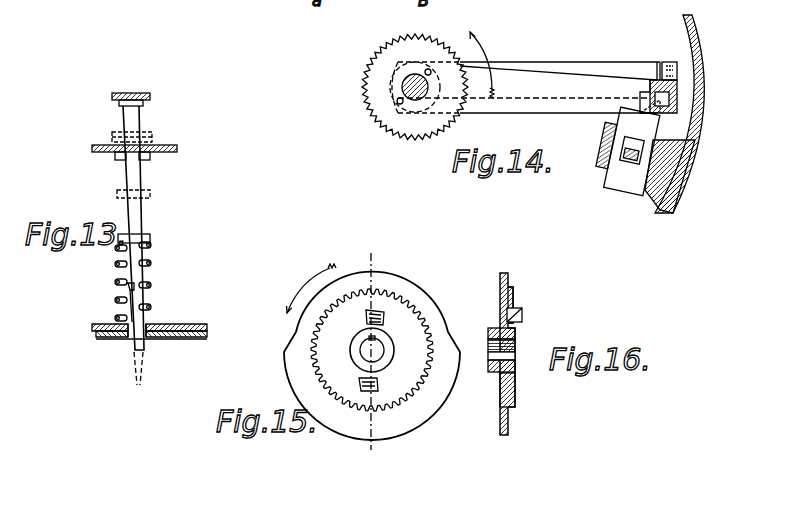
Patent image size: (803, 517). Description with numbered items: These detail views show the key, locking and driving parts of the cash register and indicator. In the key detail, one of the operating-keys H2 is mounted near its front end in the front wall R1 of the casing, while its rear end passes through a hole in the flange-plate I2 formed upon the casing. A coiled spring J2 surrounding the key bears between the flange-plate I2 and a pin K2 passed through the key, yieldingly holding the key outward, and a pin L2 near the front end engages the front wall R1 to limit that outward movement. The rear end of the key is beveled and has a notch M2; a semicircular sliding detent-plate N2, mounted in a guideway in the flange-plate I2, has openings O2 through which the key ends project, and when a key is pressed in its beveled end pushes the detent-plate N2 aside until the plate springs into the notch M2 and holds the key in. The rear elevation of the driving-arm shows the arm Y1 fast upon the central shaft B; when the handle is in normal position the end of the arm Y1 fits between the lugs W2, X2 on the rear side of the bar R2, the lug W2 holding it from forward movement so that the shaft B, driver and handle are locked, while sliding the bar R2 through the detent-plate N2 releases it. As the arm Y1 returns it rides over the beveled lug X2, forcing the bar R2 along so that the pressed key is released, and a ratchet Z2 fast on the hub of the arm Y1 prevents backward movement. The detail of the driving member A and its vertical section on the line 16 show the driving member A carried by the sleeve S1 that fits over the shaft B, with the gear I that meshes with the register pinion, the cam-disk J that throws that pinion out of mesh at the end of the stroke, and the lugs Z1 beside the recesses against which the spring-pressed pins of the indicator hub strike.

In FIG. 13, the front wall R1 is at (176, 146).
In FIG. 13, the pins L2 is at (146, 156).
In FIG. 13, the operating-keys H2 is at (131, 220).
In FIG. 14, the operating-keys H2 is at (631, 164).
In FIG. 13, the pins K2 is at (150, 241).
In FIG. 13, the coiled springs J2 is at (150, 264).
In FIG. 13, the notches M2 is at (127, 289).
In FIG. 13, the flange-plate I2 is at (171, 325).
In FIG. 14, the flange-plate I2 is at (612, 152).
In FIG. 13, the detent-plate N2 is at (151, 347).
In FIG. 14, the detent-plate N2 is at (626, 148).
In FIG. 13, the openings O2 is at (150, 337).
In FIG. 14, the shaft B is at (401, 85).
In FIG. 14, the ratchet Z2 is at (385, 104).
In FIG. 14, the arm Y1 is at (529, 97).
In FIG. 14, the bar R2 is at (585, 63).
In FIG. 14, the lug W2 is at (678, 63).
In FIG. 14, the lug X2 is at (678, 98).
In FIG. 15, the section line 16 is at (371, 360).
In FIG. 15, the driving member A is at (372, 347).
In FIG. 16, the driving member A is at (504, 338).
In FIG. 15, the cam-disk J is at (413, 312).
In FIG. 16, the cam-disk J is at (509, 284).
In FIG. 15, the gear I is at (420, 310).
In FIG. 16, the gear I is at (514, 291).
In FIG. 15, the lugs Z1 is at (385, 318).
In FIG. 16, the lugs Z1 is at (522, 313).
In FIG. 16, the sleeve S1 is at (494, 330).